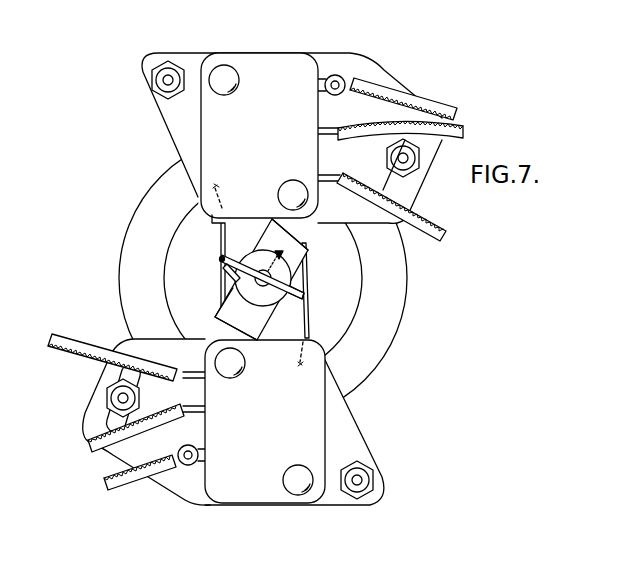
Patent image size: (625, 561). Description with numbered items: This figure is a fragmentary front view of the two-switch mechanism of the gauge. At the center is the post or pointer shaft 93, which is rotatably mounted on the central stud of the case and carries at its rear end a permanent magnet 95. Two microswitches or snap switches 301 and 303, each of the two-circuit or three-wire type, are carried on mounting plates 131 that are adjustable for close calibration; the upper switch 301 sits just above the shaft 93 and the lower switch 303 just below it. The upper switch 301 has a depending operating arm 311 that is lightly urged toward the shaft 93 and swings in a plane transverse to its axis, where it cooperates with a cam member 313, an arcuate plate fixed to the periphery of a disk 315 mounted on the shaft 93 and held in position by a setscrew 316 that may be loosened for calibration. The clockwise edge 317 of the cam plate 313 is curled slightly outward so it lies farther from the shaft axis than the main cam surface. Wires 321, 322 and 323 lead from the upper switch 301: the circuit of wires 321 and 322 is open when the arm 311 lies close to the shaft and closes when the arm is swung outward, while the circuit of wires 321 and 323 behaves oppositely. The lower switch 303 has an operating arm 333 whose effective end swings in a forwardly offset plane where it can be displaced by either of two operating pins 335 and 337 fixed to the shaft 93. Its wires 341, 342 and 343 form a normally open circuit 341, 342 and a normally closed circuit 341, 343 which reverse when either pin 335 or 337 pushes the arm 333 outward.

The microswitch 301 is at (258, 63).
The microswitch 303 is at (318, 407).
The mounting plate 131 is at (167, 115).
The wire 321 is at (445, 108).
The wire 322 is at (465, 130).
The wire 323 is at (442, 235).
The wire 341 is at (115, 485).
The wire 342 is at (90, 447).
The wire 343 is at (85, 319).
The post 93 is at (272, 219).
The permanent magnet 95 is at (260, 318).
The operating arm 311 is at (218, 236).
The cam member 313 is at (223, 312).
The disk 315 is at (250, 262).
The setscrew 316 is at (281, 254).
The clockwise edge 317 is at (225, 277).
The operating arm 333 is at (308, 323).
The operating pin 335 is at (221, 259).
The operating pin 337 is at (304, 295).